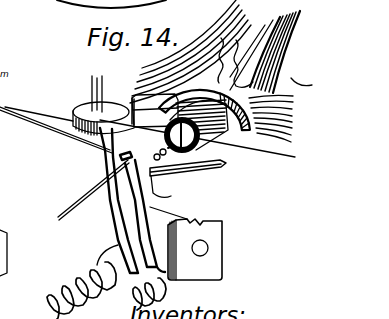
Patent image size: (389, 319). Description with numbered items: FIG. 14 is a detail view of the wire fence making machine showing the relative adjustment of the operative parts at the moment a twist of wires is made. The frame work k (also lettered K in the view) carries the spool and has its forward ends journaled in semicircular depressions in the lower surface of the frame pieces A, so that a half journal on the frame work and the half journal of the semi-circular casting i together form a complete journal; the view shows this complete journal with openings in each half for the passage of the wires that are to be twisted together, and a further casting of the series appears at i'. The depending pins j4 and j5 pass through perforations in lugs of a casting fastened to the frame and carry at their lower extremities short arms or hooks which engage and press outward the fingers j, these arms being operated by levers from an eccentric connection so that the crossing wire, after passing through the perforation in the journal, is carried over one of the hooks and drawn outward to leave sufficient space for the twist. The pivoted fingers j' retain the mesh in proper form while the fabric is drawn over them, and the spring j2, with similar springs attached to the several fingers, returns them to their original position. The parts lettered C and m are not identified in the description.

The frame piece A is at (138, 73).
The spool-carrying frame work K is at (137, 97).
The spool-carrying frame work k is at (216, 93).
The strap C is at (276, 118).
The semi-circular casting i is at (265, 46).
The semi-circular casting i' is at (301, 63).
The fingers j is at (186, 236).
The pivoted fingers j' is at (91, 200).
The spring j2 is at (192, 290).
The depending pin j4 is at (198, 172).
The depending pin j5 is at (90, 100).
The drum with pin m is at (214, 130).